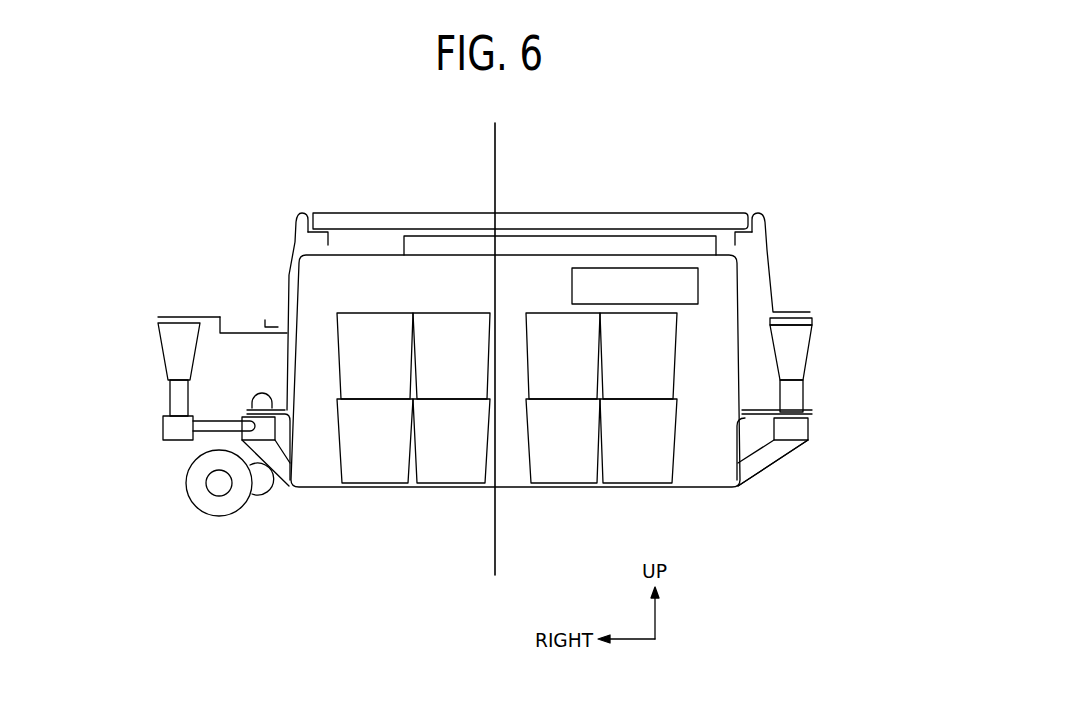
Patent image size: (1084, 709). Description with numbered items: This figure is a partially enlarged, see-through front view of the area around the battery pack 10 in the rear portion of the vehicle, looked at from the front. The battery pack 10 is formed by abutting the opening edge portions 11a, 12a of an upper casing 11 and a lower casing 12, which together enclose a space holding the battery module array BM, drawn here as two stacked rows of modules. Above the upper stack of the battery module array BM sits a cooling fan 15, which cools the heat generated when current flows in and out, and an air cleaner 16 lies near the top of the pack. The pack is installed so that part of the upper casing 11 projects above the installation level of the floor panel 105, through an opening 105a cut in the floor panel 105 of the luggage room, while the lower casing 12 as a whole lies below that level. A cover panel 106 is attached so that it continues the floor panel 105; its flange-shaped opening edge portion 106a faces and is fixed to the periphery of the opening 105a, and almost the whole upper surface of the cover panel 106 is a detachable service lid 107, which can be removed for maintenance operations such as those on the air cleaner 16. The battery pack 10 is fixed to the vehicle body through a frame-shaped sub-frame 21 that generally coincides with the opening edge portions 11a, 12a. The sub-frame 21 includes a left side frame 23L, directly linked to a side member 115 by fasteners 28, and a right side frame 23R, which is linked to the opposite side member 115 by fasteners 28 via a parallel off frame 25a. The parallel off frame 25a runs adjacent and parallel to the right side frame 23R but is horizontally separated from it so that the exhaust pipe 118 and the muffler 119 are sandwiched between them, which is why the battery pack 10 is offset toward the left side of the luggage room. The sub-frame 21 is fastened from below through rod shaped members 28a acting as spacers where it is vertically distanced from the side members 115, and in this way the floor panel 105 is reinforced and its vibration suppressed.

The battery pack 10 is at (650, 246).
The upper casing 11 is at (738, 300).
The opening edge portion 11a is at (279, 407).
The lower casing 12 is at (756, 472).
The opening edge portion 12a is at (251, 424).
The cooling fan 15 is at (698, 287).
The air cleaner 16 is at (600, 236).
The sub-frame 21 is at (822, 455).
The left side frame 23L is at (809, 431).
The right side frame 23R is at (257, 427).
The parallel off frame 25a is at (163, 429).
The fastener 28 is at (253, 398).
The rod shaped member 28a is at (169, 389).
The floor panel 105 is at (172, 317).
The opening 105a is at (265, 318).
The cover panel 106 is at (769, 228).
The opening edge portion 106a is at (282, 318).
The service lid 107 is at (540, 212).
The side member 115 is at (162, 346).
The exhaust pipe 118 is at (262, 489).
The muffler 119 is at (186, 484).
The battery module array BM is at (342, 385).